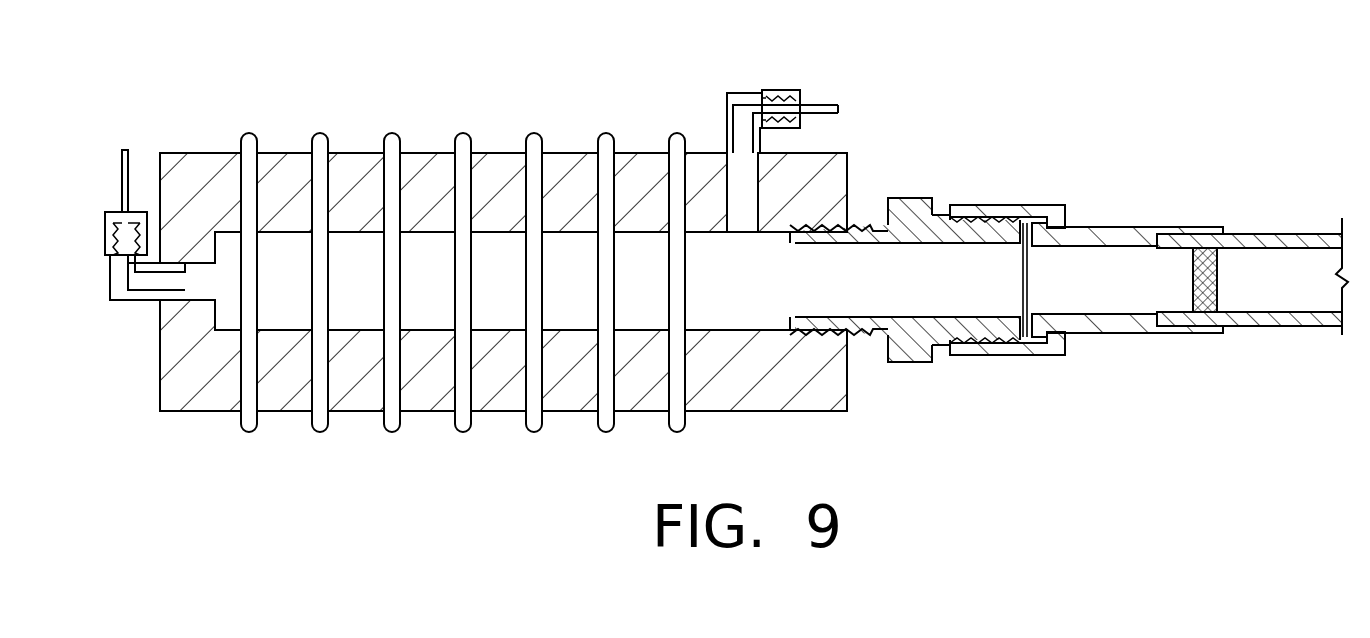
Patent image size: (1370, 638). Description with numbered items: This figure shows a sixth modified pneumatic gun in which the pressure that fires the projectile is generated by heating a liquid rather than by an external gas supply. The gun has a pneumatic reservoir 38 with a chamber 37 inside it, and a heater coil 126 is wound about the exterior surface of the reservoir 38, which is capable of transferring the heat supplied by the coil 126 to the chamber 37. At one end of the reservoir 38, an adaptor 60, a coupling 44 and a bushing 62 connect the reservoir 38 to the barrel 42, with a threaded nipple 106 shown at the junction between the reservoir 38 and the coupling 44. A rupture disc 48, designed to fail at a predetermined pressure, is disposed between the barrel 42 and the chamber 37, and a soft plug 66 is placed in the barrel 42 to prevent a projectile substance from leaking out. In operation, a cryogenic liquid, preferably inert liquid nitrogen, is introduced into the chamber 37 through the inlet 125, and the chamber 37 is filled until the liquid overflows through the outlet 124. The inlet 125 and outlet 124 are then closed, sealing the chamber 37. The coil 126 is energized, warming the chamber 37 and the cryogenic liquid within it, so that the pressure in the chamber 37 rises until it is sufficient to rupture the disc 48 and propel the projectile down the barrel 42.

The chamber 37 is at (508, 337).
The pneumatic reservoir 38 is at (287, 190).
The barrel 42 is at (1272, 234).
The coupling 44 is at (1003, 205).
The rupture disc 48 is at (1030, 275).
The adaptor 60 is at (915, 197).
The bushing 62 is at (1130, 333).
The soft plug 66 is at (1202, 247).
The threaded nipple 106 is at (805, 333).
The outlet 124 is at (740, 185).
The inlet 125 is at (180, 279).
The heater coil 126 is at (249, 416).